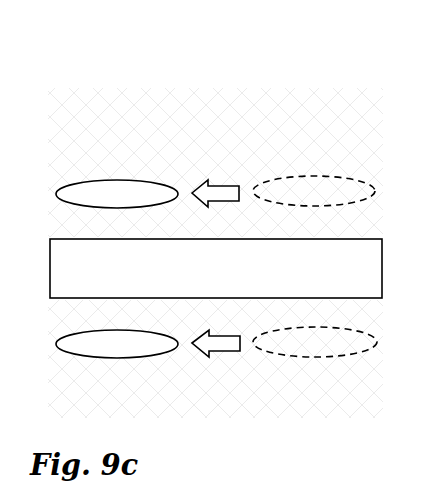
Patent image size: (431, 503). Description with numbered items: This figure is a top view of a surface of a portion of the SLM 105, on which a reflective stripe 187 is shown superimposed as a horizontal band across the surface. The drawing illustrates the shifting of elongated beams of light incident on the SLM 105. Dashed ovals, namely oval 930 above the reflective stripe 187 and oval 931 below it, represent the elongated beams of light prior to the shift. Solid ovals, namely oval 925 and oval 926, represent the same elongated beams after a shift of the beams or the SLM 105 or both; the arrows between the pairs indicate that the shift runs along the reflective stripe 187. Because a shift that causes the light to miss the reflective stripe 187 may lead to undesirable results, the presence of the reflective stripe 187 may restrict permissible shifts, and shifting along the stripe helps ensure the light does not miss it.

The SLM 105 is at (121, 40).
The reflective stripe 187 is at (72, 268).
The oval 925 is at (76, 183).
The oval 926 is at (76, 334).
The oval 930 is at (348, 181).
The oval 931 is at (348, 331).